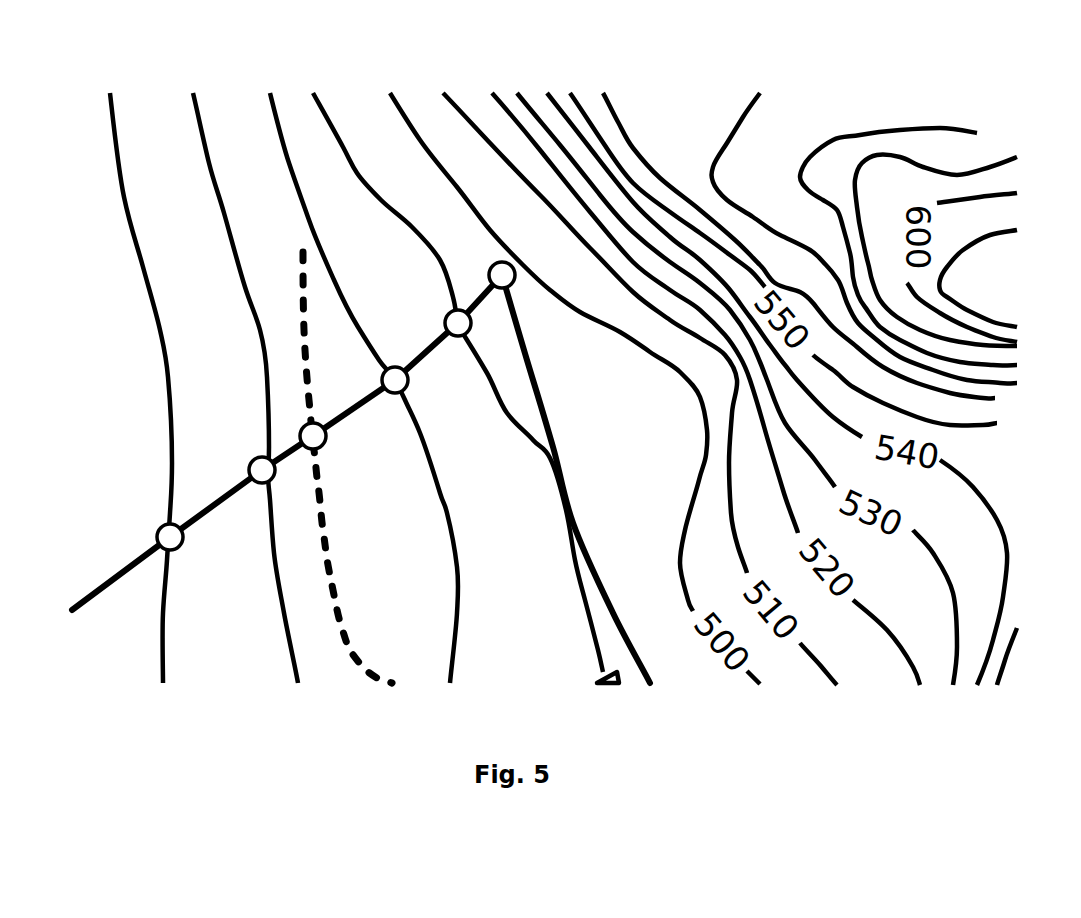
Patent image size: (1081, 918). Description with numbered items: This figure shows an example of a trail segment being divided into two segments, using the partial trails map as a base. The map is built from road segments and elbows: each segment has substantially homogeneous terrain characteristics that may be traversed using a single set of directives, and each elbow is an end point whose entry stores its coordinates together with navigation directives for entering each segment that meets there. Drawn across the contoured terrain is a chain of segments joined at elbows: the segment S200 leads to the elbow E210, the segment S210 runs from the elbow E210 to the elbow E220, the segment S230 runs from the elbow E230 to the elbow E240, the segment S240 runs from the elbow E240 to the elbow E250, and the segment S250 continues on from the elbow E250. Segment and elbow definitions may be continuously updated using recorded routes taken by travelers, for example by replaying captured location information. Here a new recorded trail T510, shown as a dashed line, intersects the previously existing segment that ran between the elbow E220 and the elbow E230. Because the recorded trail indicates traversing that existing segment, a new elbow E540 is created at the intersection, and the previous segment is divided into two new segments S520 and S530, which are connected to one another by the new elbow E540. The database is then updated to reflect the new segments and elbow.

The segment S200 is at (103, 585).
The segment S210 is at (217, 501).
The new segment S520 is at (293, 451).
The new segment S530 is at (352, 407).
The segment S230 is at (425, 353).
The segment S240 is at (487, 296).
The segment S250 is at (540, 380).
The elbow E210 is at (178, 548).
The elbow E220 is at (276, 476).
The new elbow E540 is at (299, 431).
The elbow E230 is at (407, 392).
The elbow E240 is at (447, 311).
The elbow E250 is at (503, 260).
The recorded trail T510 is at (300, 280).